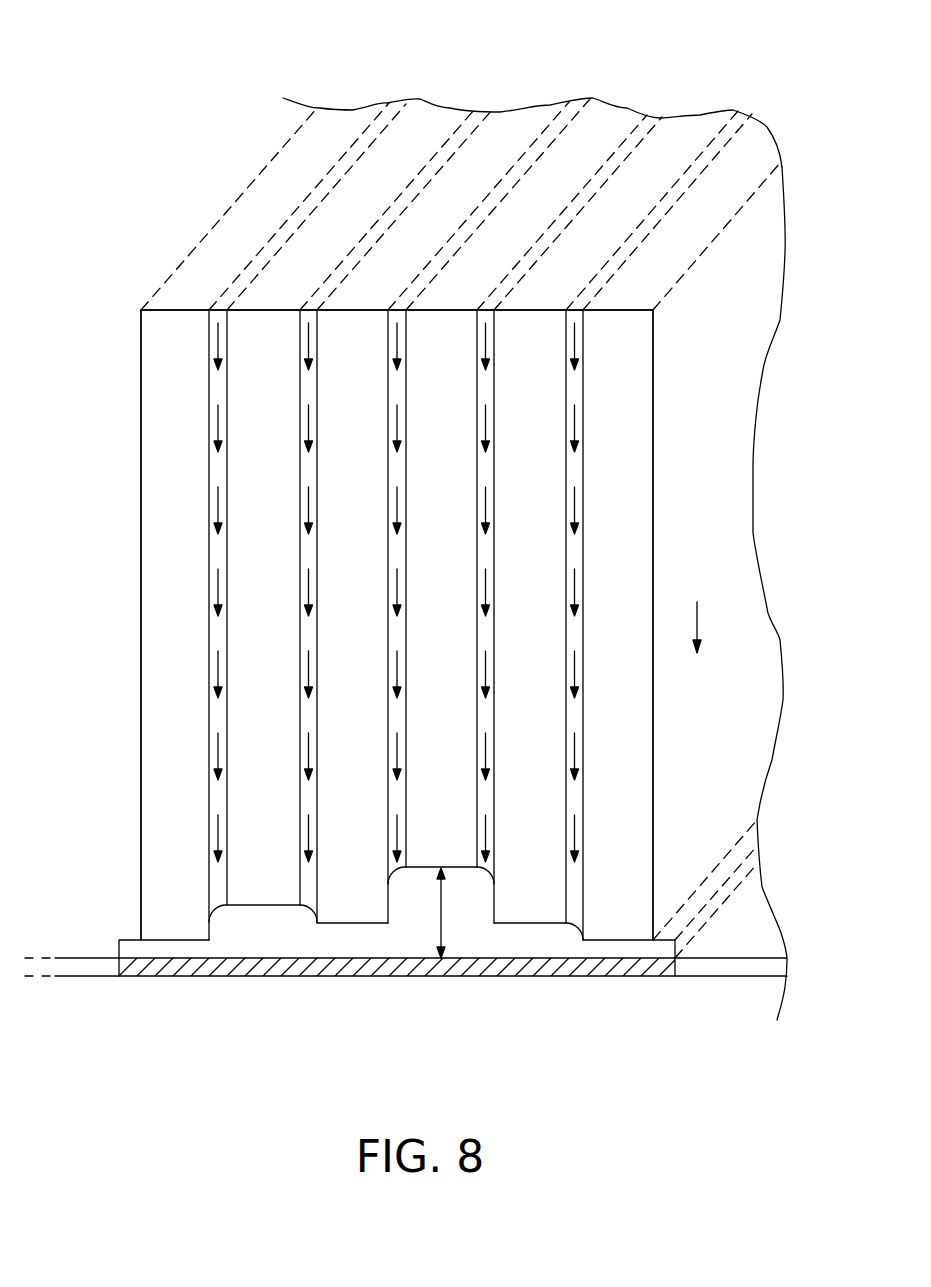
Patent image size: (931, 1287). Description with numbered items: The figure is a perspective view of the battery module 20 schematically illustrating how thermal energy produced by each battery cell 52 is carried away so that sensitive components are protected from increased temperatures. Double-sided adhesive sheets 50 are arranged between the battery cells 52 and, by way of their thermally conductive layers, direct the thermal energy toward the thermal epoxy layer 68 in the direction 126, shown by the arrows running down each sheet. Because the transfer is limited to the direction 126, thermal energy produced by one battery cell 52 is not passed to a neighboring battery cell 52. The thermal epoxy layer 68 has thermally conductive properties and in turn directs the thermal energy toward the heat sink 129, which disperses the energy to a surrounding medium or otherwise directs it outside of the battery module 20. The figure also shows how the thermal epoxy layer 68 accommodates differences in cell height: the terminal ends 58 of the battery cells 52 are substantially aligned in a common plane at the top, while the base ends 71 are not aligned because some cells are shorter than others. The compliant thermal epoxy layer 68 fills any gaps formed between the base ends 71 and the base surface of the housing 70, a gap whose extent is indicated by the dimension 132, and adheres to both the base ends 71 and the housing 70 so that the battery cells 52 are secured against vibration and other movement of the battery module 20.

The battery module 20 is at (177, 67).
The terminal ends 58 is at (420, 237).
The double-sided adhesive sheets 50 is at (337, 277).
The battery cell 52 is at (342, 560).
The direction 126 is at (698, 618).
The base ends 71 is at (265, 907).
The thermal epoxy layer 68 is at (422, 925).
The chamber height 132 is at (443, 903).
The housing 70 is at (87, 977).
The heat sink 129 is at (156, 977).